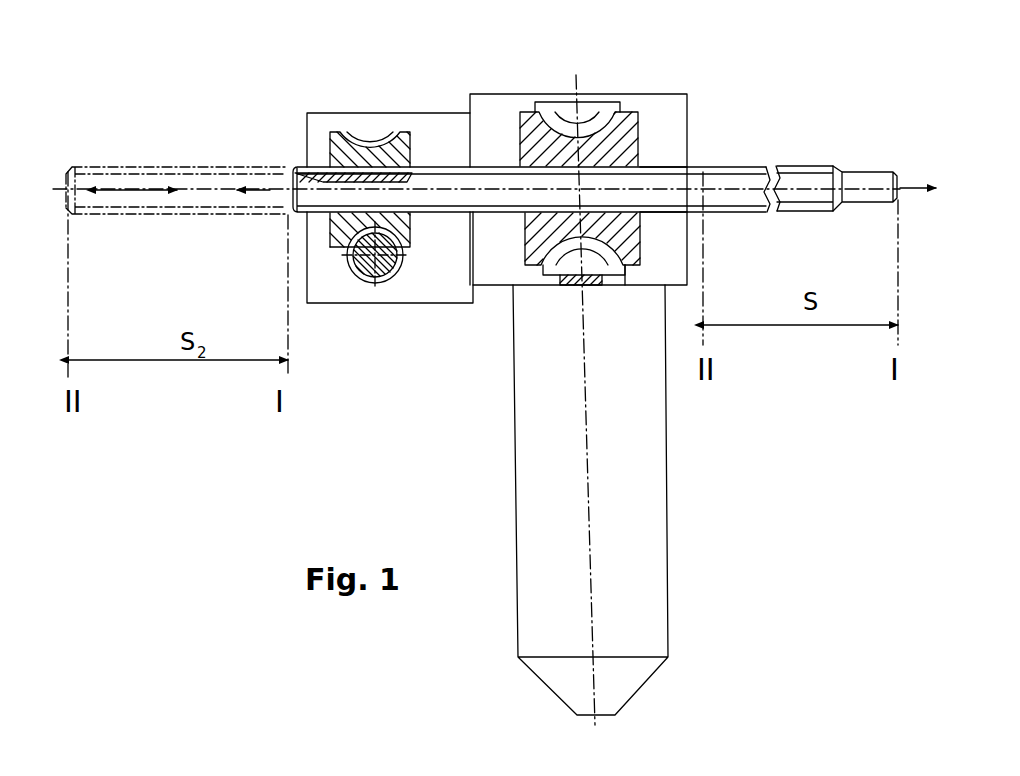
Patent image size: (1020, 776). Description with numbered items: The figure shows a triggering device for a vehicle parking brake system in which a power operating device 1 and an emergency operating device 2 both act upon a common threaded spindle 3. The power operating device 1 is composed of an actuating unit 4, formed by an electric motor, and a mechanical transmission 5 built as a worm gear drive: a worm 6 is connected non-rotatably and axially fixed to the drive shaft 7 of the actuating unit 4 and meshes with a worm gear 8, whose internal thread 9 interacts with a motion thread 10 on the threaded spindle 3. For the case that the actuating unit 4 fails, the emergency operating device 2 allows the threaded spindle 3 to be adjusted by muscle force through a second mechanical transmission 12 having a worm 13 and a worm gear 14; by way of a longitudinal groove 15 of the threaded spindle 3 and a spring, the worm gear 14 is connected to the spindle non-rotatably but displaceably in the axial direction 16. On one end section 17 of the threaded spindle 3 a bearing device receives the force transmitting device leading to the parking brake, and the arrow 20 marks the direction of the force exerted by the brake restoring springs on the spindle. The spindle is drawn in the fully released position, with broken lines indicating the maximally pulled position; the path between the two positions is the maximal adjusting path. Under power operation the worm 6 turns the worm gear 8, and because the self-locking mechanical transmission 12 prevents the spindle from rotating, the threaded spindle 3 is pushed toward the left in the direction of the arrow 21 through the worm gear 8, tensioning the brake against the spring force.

The power operating device 1 is at (634, 72).
The emergency operating device 2 is at (396, 80).
The threaded spindle 3 is at (795, 178).
The actuating unit 4 is at (667, 500).
The mechanical transmission 5 is at (637, 290).
The worm 6 is at (601, 279).
The drive shaft 7 is at (571, 283).
The worm gear 8 is at (633, 239).
The internal thread 9 is at (624, 168).
The motion thread 10 is at (674, 166).
The mechanical transmission 12 is at (348, 274).
The worm 13 is at (394, 264).
The worm gear 14 is at (334, 132).
The longitudinal groove 15 is at (328, 172).
The axial direction 16 is at (138, 190).
The end section 17 is at (842, 166).
The arrow 20 is at (905, 186).
The arrow 21 is at (258, 190).